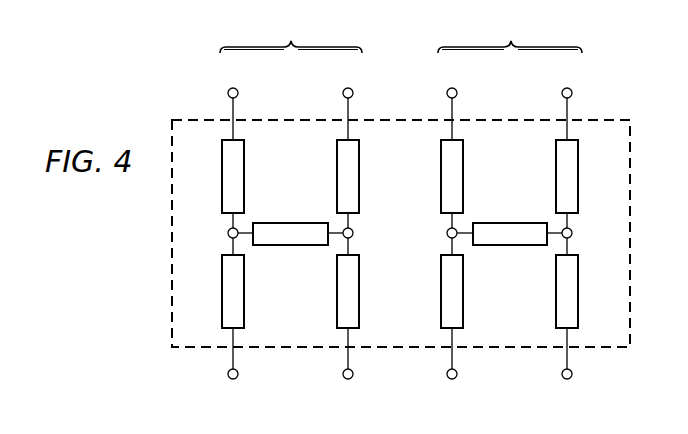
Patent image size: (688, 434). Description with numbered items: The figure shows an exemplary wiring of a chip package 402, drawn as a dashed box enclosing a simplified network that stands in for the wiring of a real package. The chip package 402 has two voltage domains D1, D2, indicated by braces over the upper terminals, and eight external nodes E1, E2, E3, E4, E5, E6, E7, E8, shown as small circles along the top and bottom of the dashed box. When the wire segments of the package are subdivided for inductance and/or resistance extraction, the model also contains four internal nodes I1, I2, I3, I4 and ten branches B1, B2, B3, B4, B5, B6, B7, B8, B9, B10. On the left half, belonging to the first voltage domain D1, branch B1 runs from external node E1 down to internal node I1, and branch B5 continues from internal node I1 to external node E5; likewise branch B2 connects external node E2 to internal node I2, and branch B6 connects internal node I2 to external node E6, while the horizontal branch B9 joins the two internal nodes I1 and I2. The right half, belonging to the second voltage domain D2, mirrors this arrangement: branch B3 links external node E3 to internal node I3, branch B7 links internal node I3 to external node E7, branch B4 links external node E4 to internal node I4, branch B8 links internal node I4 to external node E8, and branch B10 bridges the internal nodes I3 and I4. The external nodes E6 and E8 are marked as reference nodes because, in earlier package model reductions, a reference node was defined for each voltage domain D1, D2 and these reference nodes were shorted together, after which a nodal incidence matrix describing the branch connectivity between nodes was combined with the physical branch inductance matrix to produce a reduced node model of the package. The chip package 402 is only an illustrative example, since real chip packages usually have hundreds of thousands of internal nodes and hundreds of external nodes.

The chip package 402 is at (172, 283).
The branch B1 is at (246, 184).
The branch B2 is at (361, 184).
The branch B3 is at (465, 184).
The branch B4 is at (580, 184).
The branch B5 is at (246, 303).
The branch B6 is at (361, 303).
The branch B7 is at (465, 303).
The branch B8 is at (580, 303).
The branch B9 is at (290, 223).
The branch B10 is at (510, 223).
The external node E1 is at (234, 101).
The external node E2 is at (349, 101).
The external node E3 is at (453, 101).
The external node E4 is at (568, 101).
The external node E5 is at (234, 389).
The external node E6 is at (364, 387).
The external node E7 is at (453, 389).
The external node E8 is at (584, 387).
The internal node I1 is at (229, 236).
The internal node I2 is at (351, 236).
The internal node I3 is at (449, 236).
The internal node I4 is at (570, 236).
The voltage domain D1 is at (291, 36).
The voltage domain D2 is at (510, 36).